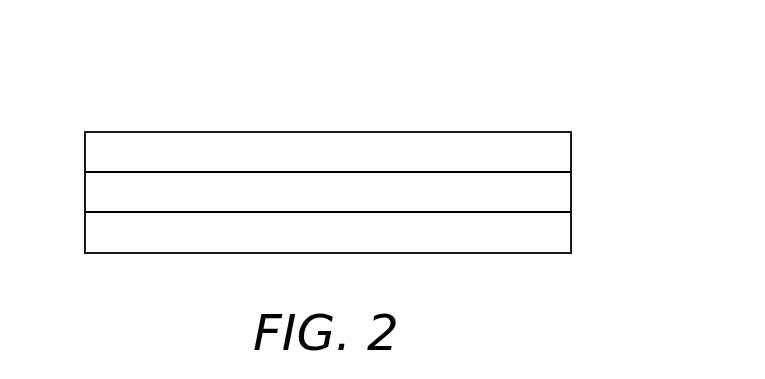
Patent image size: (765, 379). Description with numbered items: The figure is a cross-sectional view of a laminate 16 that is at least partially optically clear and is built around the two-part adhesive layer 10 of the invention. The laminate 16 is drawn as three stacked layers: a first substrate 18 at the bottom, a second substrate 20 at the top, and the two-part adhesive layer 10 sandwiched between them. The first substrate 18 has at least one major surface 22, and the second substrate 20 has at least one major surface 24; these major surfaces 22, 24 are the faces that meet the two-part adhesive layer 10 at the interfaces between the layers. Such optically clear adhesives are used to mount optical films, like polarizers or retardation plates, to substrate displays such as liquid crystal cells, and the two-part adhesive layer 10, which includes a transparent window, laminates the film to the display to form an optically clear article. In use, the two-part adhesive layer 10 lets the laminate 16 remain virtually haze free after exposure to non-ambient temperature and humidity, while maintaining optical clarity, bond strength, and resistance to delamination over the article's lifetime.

The laminate 16 is at (577, 78).
The second substrate 20 is at (562, 148).
The two-part adhesive layer 10 is at (562, 195).
The first substrate 18 is at (562, 235).
The major surface 24 is at (508, 160).
The major surface 22 is at (509, 225).